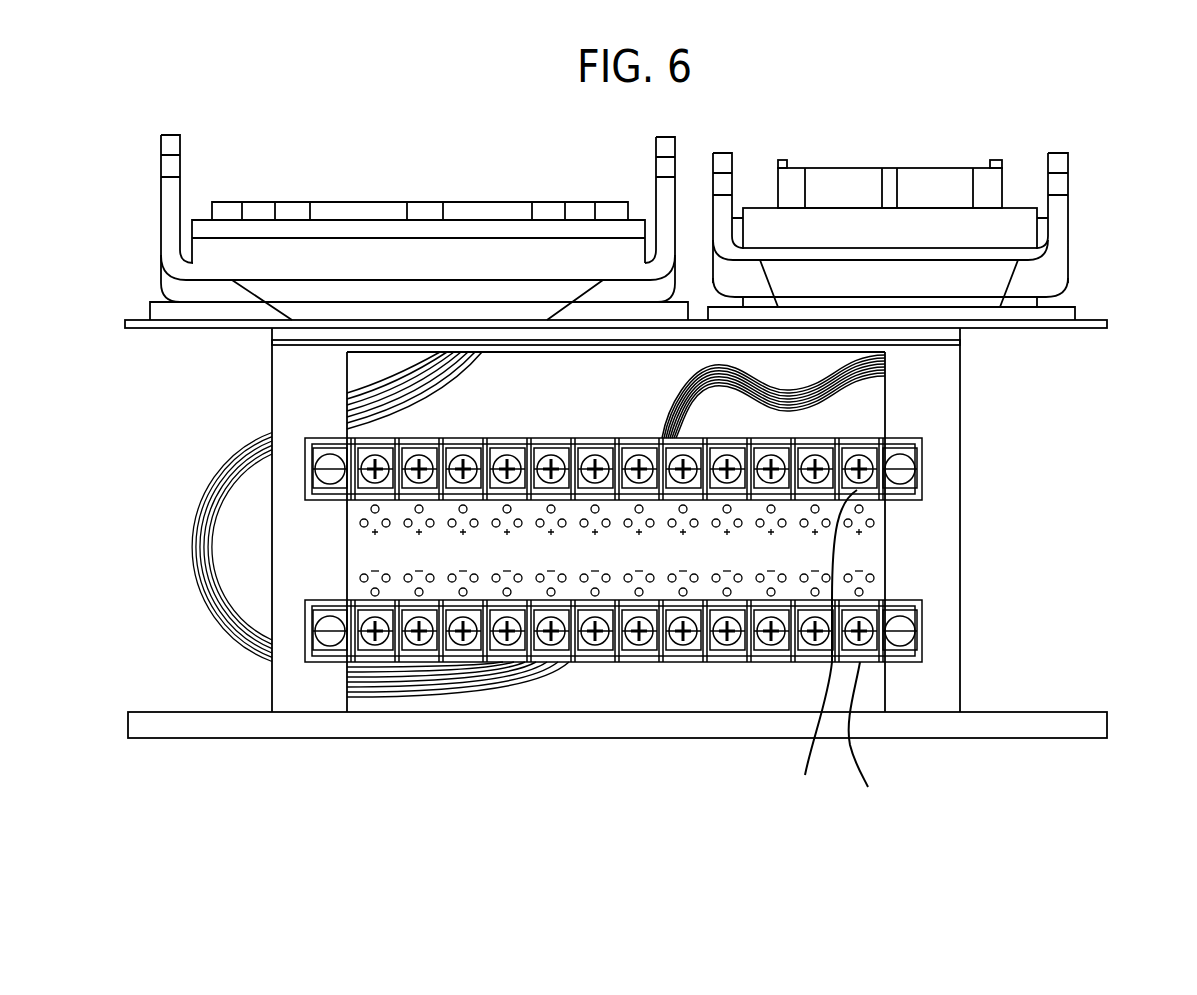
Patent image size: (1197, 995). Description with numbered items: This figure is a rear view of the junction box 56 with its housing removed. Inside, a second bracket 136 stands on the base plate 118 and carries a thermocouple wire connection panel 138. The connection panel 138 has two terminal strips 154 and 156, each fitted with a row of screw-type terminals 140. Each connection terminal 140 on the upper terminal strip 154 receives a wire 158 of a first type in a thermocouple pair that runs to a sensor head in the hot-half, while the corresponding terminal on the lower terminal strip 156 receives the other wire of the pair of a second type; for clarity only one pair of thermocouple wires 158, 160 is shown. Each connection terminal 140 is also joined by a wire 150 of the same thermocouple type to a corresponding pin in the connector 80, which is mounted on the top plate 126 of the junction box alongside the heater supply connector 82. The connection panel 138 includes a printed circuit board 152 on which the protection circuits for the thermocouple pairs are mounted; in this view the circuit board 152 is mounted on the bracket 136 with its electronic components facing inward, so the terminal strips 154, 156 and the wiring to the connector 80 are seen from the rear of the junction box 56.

The junction box 56 is at (1022, 131).
The connector 80 is at (848, 168).
The heater supply connector 82 is at (387, 220).
The base plate 118 is at (1020, 725).
The top plate 126 is at (1096, 318).
The second bracket 136 is at (927, 558).
The thermocouple wire connection panel 138 is at (696, 677).
The screw-type terminal 140 is at (769, 655).
The wire 150 is at (800, 405).
The printed circuit board 152 is at (867, 532).
The terminal strip 154 is at (325, 440).
The terminal strip 156 is at (335, 600).
The thermocouple wire 158 is at (855, 758).
The thermocouple wire 160 is at (805, 758).